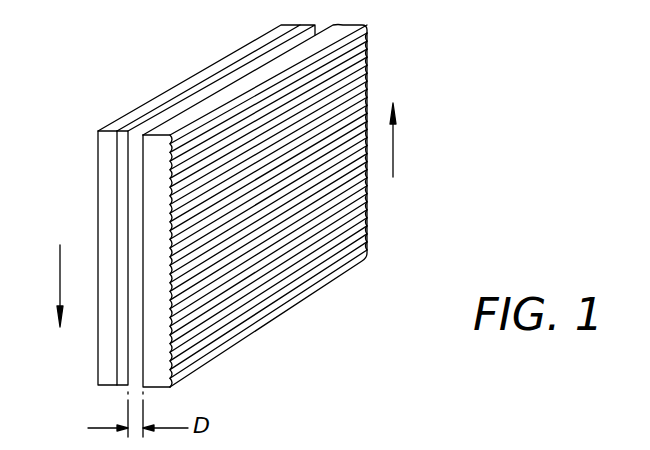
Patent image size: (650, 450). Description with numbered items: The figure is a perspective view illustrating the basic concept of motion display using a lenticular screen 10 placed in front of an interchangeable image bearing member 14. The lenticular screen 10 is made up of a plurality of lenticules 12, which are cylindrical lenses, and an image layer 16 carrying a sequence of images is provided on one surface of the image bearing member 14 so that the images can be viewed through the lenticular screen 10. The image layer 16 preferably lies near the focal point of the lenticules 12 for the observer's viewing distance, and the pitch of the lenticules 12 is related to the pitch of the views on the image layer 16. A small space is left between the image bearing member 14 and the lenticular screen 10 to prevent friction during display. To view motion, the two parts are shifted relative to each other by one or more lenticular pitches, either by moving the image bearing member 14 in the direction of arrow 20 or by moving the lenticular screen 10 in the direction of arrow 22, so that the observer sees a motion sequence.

The lenticular screen 10 is at (302, 302).
The lenticules 12 is at (190, 348).
The image bearing member 14 is at (98, 158).
The image layer 16 is at (123, 355).
The arrow 20 is at (41, 286).
The arrow 22 is at (411, 140).